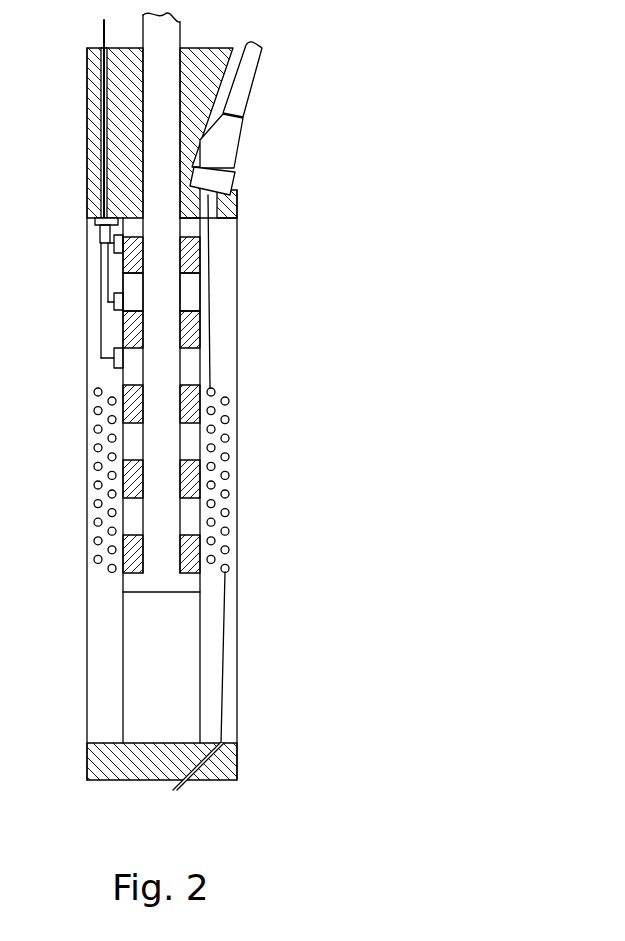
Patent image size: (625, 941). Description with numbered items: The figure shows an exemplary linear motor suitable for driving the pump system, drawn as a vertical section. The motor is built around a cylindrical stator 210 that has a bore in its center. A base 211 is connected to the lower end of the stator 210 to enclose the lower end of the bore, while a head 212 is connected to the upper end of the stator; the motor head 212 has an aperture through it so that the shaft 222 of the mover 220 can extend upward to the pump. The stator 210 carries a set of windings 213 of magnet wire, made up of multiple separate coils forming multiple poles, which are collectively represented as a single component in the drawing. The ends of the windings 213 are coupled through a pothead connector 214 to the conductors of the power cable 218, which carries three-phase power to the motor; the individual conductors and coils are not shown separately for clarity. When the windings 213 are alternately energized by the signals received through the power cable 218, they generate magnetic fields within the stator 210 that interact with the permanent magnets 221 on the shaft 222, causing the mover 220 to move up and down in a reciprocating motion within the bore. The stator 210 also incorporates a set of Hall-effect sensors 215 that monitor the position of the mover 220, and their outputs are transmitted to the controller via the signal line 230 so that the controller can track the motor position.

The cylindrical stator 210 is at (87, 334).
The base 211 is at (237, 763).
The head 212 is at (87, 102).
The windings 213 is at (247, 387).
The pothead connector 214 is at (236, 157).
The Hall-effect sensors 215 is at (114, 249).
The power cable 218 is at (263, 72).
The mover 220 is at (138, 597).
The permanent magnets 221 is at (201, 328).
The shaft 222 is at (140, 288).
The signal line 230 is at (103, 35).